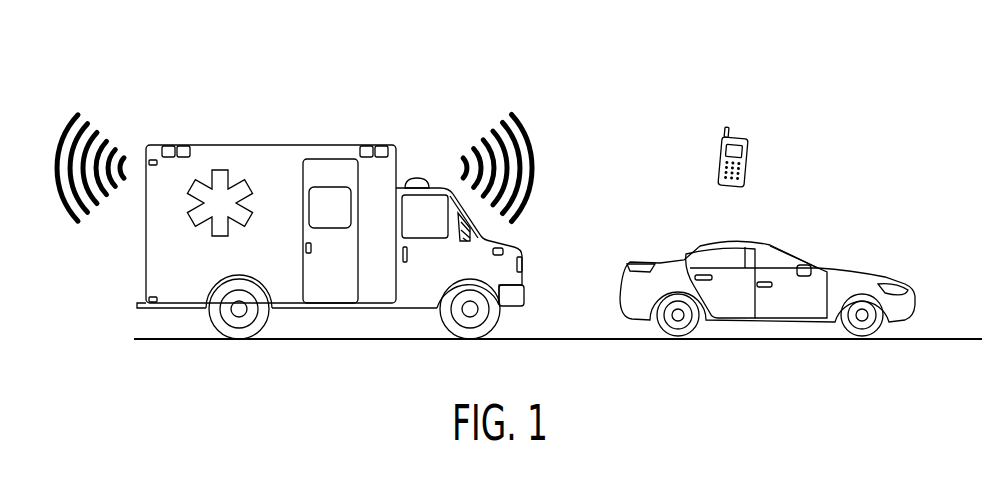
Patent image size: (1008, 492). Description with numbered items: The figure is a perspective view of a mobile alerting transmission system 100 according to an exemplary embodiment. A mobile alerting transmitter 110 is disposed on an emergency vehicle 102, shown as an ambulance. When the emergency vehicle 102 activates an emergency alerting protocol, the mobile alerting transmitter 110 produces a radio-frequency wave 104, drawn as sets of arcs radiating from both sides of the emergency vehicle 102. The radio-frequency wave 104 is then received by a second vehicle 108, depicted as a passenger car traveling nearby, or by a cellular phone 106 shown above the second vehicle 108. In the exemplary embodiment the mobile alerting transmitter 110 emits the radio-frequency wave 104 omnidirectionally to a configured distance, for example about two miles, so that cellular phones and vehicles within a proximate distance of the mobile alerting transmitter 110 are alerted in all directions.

The mobile alerting transmission system 100 is at (255, 46).
The emergency vehicle 102 is at (337, 145).
The radio-frequency wave 104 is at (78, 117).
The cellular phone 106 is at (748, 160).
The second vehicle 108 is at (795, 255).
The mobile alerting transmitter 110 is at (415, 177).